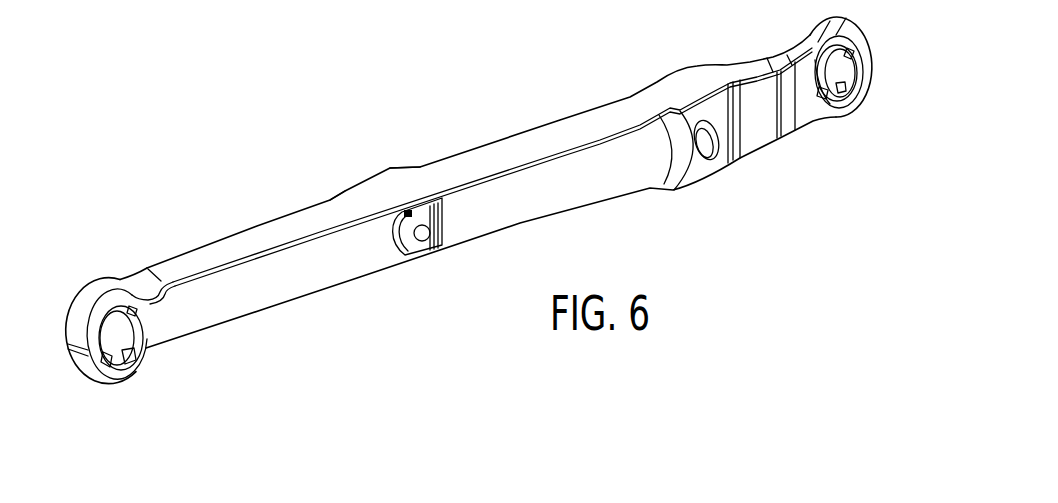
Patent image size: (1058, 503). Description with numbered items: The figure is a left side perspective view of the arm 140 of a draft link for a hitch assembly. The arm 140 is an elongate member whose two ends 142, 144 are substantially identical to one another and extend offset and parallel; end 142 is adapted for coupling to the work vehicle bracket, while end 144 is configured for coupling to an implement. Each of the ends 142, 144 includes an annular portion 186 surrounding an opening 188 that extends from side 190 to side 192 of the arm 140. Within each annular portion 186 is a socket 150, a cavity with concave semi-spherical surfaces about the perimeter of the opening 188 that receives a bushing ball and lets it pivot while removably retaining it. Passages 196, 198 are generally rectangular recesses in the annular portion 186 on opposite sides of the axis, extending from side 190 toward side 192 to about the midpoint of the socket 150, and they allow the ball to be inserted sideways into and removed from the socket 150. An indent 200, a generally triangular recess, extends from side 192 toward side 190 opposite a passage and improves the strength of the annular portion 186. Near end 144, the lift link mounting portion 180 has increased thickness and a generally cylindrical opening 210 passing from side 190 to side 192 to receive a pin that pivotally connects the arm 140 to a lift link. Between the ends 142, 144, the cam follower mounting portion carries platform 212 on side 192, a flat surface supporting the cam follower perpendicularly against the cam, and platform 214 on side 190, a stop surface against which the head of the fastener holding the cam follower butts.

The arm 140 is at (188, 131).
The end 142 is at (72, 274).
The end 144 is at (806, 16).
The socket 150 is at (130, 327).
The lift link mounting portion 180 is at (670, 104).
The annular portion 186 is at (100, 293).
The opening 188 is at (861, 67).
The side 190 is at (322, 300).
The side 192 is at (254, 222).
The passage 196 is at (125, 360).
The passage 198 is at (118, 316).
The indent 200 is at (114, 348).
The opening 210 is at (712, 155).
The platform 212 is at (362, 182).
The platform 214 is at (428, 215).